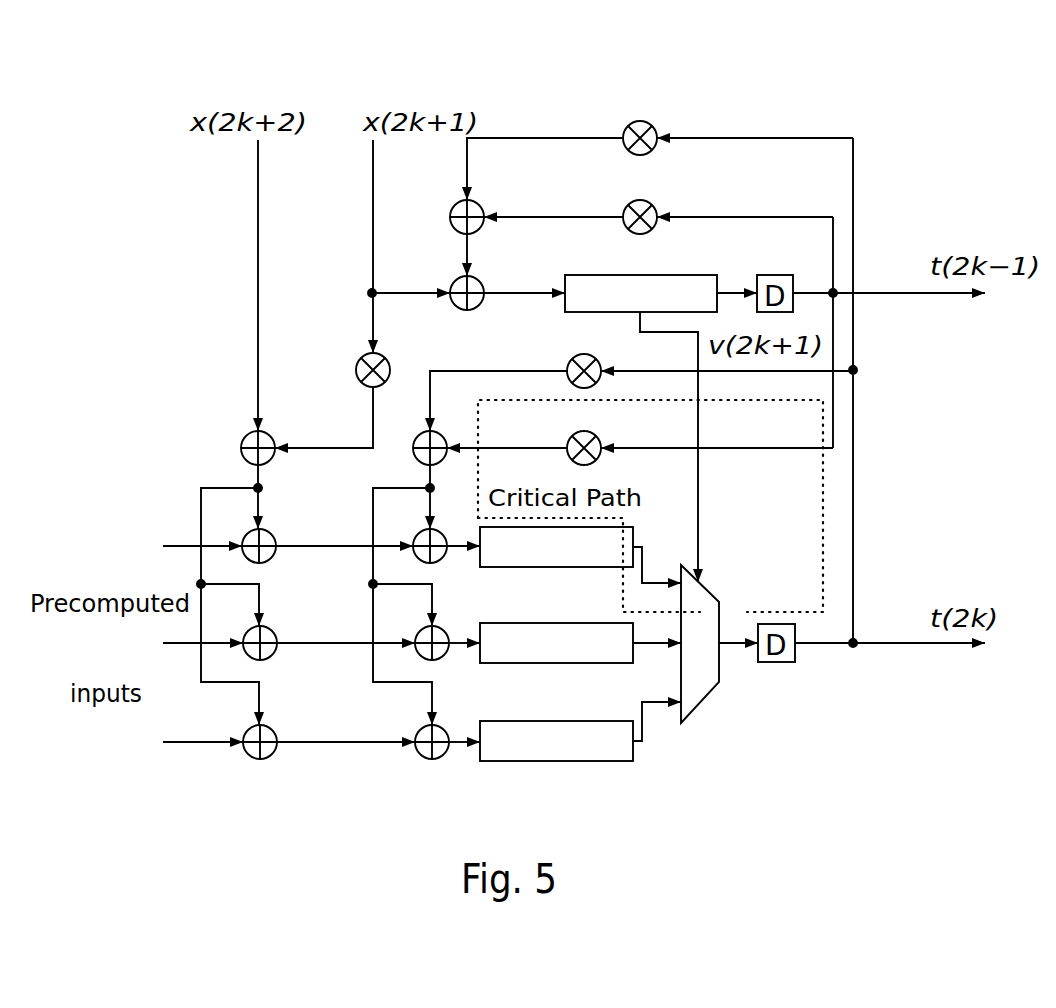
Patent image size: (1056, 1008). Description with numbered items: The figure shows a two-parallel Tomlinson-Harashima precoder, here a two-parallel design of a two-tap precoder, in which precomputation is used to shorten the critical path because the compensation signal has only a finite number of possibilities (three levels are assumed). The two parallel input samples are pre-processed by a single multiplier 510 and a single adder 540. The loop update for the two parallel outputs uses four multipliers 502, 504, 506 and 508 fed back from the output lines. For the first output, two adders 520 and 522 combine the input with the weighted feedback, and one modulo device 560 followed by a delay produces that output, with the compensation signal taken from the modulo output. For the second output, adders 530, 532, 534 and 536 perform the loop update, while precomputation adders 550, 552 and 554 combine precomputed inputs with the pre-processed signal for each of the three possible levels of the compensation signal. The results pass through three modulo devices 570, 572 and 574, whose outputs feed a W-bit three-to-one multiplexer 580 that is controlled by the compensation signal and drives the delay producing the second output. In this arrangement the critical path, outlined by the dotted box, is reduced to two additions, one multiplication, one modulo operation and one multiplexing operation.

The multiplier 502 is at (652, 126).
The multiplier 504 is at (652, 205).
The multiplier 506 is at (576, 361).
The multiplier 508 is at (576, 440).
The multiplier 510 is at (362, 361).
The adder 520 is at (479, 206).
The adder 522 is at (479, 283).
The adder 530 is at (440, 437).
The adder 532 is at (440, 535).
The adder 534 is at (442, 632).
The adder 536 is at (442, 730).
The adder 540 is at (270, 438).
The adder 550 is at (270, 537).
The adder 552 is at (271, 634).
The adder 554 is at (271, 733).
The modulo device 560 is at (700, 297).
The modulo device 570 is at (556, 557).
The modulo device 572 is at (548, 650).
The modulo device 574 is at (623, 750).
The multiplexer 580 is at (712, 682).